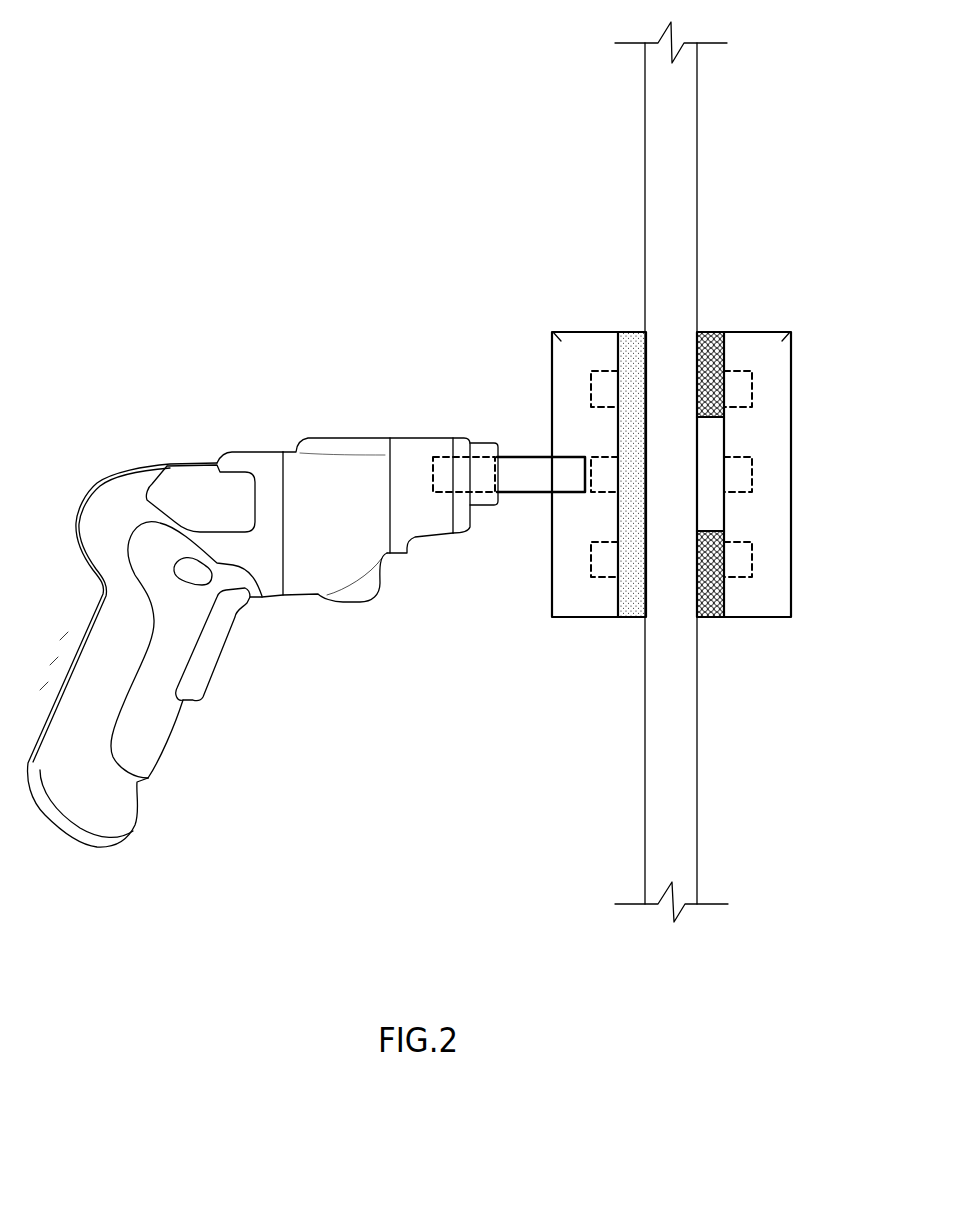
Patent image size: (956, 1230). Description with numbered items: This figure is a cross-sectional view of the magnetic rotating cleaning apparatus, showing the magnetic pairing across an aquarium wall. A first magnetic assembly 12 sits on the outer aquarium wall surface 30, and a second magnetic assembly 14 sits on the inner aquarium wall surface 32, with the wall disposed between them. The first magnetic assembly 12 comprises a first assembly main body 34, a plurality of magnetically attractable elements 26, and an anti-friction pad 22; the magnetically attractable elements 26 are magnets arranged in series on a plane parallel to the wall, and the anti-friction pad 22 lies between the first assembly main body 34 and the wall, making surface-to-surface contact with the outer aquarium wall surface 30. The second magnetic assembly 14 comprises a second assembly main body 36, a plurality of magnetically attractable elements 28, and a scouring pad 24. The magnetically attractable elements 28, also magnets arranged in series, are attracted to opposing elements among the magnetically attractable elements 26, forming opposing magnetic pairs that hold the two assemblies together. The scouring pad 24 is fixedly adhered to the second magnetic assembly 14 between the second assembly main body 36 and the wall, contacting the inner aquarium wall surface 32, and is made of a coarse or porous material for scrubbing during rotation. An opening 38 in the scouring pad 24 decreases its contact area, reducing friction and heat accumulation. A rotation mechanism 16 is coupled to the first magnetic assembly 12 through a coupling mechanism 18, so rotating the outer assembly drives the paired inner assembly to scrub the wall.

The first magnetic assembly 12 is at (568, 622).
The second magnetic assembly 14 is at (772, 622).
The rotation mechanism 16 is at (227, 511).
The coupling mechanism 18 is at (539, 483).
The anti-friction pad 22 is at (632, 619).
The scouring pad 24 is at (710, 619).
The magnetically attractable elements 26 is at (608, 370).
The magnetically attractable elements 28 is at (738, 370).
The outer aquarium wall surface 30 is at (645, 157).
The inner aquarium wall surface 32 is at (697, 120).
The first assembly main body 34 is at (553, 332).
The second assembly main body 36 is at (790, 332).
The opening 38 is at (713, 500).